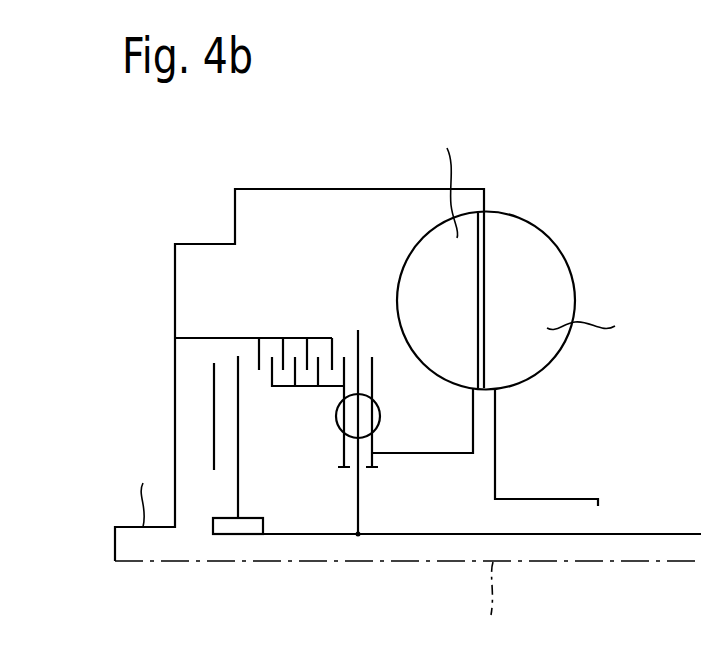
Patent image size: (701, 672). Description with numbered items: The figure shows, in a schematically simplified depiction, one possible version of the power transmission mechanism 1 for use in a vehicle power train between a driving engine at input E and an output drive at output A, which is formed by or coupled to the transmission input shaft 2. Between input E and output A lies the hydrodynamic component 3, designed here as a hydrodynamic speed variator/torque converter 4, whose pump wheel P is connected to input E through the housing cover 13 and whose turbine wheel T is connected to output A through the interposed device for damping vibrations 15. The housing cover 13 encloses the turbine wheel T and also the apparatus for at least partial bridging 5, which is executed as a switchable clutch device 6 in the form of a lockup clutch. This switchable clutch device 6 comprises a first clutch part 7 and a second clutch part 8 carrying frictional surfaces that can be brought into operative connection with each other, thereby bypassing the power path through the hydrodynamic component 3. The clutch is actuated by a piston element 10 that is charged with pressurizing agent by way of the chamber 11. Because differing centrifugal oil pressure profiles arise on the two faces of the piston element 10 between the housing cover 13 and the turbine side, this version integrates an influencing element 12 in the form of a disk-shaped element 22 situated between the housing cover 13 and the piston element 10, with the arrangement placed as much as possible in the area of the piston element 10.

The power transmission mechanism 1 is at (507, 162).
The transmission input shaft 2 is at (411, 535).
The hydrodynamic component 3 is at (522, 359).
The hydrodynamic speed variator/torque converter 4 is at (562, 252).
The apparatus for at least partial bridging 5 is at (198, 320).
The switchable clutch device 6 is at (207, 338).
The first clutch part 7 is at (259, 337).
The second clutch part 8 is at (313, 388).
The piston element 10 is at (238, 440).
The chamber pressurizable with a pressurizing agent 11 is at (203, 377).
The influencing element 12 is at (149, 445).
The housing cover 13 is at (341, 189).
The device for damping vibrations 15 is at (358, 330).
The disk-shaped element 22 is at (213, 427).